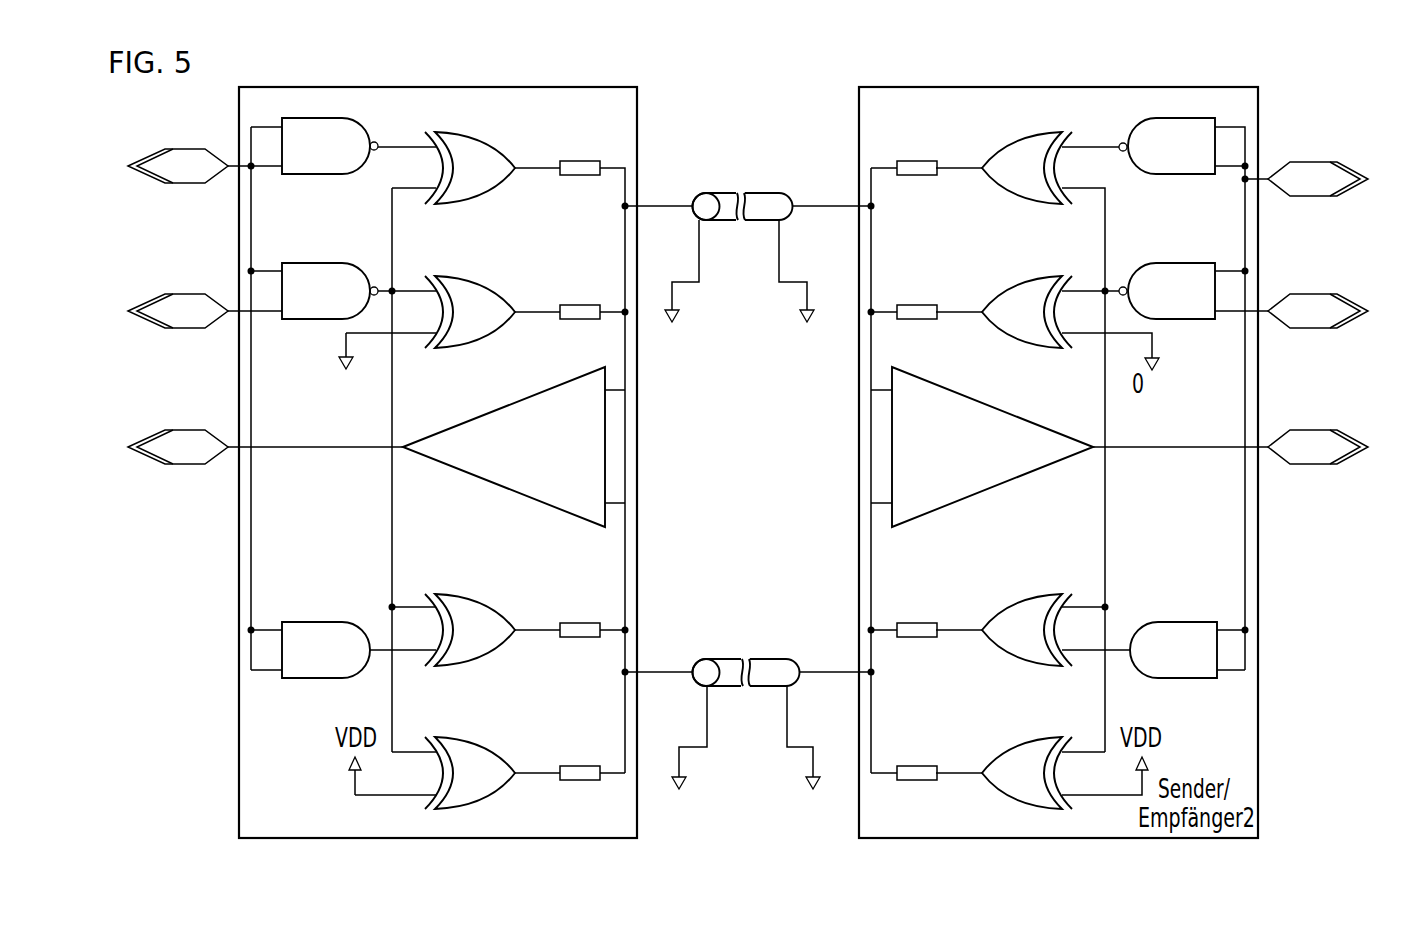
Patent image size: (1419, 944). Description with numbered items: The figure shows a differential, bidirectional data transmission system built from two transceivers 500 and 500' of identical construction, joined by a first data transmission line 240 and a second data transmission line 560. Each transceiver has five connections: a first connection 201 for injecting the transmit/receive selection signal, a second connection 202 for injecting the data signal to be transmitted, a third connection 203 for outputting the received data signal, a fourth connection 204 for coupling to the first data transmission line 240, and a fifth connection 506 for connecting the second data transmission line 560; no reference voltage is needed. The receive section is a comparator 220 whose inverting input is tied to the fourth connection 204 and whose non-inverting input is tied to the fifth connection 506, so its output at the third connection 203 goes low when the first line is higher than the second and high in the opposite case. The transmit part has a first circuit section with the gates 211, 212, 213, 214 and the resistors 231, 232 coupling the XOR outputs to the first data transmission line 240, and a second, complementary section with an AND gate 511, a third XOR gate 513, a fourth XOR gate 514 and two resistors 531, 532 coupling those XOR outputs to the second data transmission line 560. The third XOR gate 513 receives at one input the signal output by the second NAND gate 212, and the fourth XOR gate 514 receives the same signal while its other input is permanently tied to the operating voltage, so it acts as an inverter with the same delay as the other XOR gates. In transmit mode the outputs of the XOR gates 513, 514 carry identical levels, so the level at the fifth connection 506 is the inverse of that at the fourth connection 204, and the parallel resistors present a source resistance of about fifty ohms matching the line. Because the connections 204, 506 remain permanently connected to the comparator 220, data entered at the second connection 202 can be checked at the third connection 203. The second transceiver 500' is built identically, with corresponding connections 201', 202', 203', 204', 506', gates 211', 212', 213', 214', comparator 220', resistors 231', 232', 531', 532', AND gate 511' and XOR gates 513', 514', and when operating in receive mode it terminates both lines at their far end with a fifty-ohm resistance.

The transceiver 500 is at (472, 461).
The transceiver 500' is at (1024, 461).
The first connection 201 is at (169, 180).
The second connection 202 is at (178, 324).
The third connection 203 is at (178, 464).
The NAND gate 211 is at (322, 162).
The second NAND gate 212 is at (323, 310).
The XOR gate 213 is at (468, 184).
The XOR gate 214 is at (468, 330).
The comparator 220 is at (504, 449).
The resistor 231 is at (572, 153).
The resistor 232 is at (572, 299).
The fourth connection 204 is at (659, 219).
The first data transmission line 240 is at (752, 224).
The AND gate 511 is at (322, 667).
The third XOR gate 513 is at (460, 610).
The fourth XOR gate 514 is at (464, 754).
The resistor 531 is at (572, 617).
The resistor 532 is at (572, 758).
The fifth connection 506 is at (661, 688).
The second data transmission line 560 is at (760, 688).
The REC/TRAN2 control terminal 201' is at (1320, 195).
The TXD2 transmit data terminal 202' is at (1318, 327).
The RXD2 receive data terminal 203' is at (1318, 462).
The NAND gate U3A 211' is at (1176, 162).
The NAND gate U3B 212' is at (1176, 309).
The XOR gate U4A 213' is at (1027, 183).
The XOR gate U4B 214' is at (1027, 324).
The comparator COMP2A 220' is at (992, 449).
The resistor R5 231' is at (925, 153).
The resistor R6 232' is at (925, 299).
The I/O2 line terminal 204' is at (831, 219).
The AND gate U6A 511' is at (1176, 668).
The XOR gate U4C 513' is at (1032, 614).
The XOR gate U4D 514' is at (1031, 758).
The resistor R7 531' is at (925, 617).
The resistor R8 532' is at (925, 758).
The I/O2b line terminal 506' is at (835, 688).